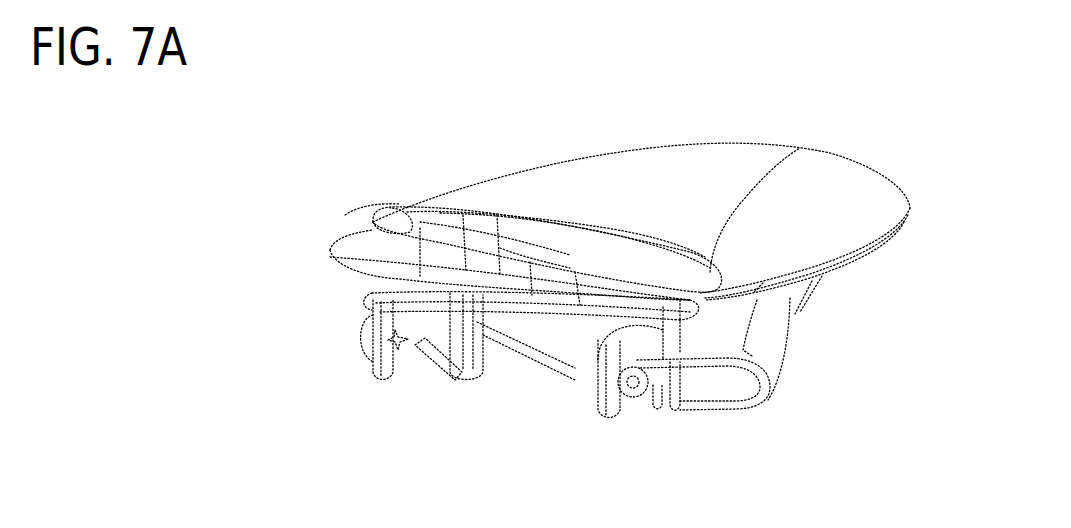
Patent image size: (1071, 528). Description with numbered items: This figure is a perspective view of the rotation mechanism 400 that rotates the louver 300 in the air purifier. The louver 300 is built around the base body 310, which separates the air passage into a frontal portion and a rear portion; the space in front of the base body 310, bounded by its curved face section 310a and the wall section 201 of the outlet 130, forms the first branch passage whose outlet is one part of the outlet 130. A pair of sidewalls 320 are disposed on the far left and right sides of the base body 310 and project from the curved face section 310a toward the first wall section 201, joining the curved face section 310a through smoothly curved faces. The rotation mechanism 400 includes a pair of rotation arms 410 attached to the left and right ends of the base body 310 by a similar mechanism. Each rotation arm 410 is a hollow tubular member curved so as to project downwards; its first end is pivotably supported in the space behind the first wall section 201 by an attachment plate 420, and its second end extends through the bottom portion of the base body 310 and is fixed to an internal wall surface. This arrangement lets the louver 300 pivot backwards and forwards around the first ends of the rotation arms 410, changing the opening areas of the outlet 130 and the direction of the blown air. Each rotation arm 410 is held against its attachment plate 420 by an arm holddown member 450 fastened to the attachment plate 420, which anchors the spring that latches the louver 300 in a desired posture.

The outlet 130 is at (662, 212).
The wall section 201 is at (793, 187).
The louver 300 is at (397, 205).
The base body 310 is at (480, 222).
The curved face section 310a is at (543, 270).
The sidewalls 320 is at (693, 278).
The rotation mechanism 400 is at (317, 382).
The rotation arms 410 is at (460, 378).
The attachment plates 420 is at (403, 373).
The arm holddown members 450 is at (377, 360).